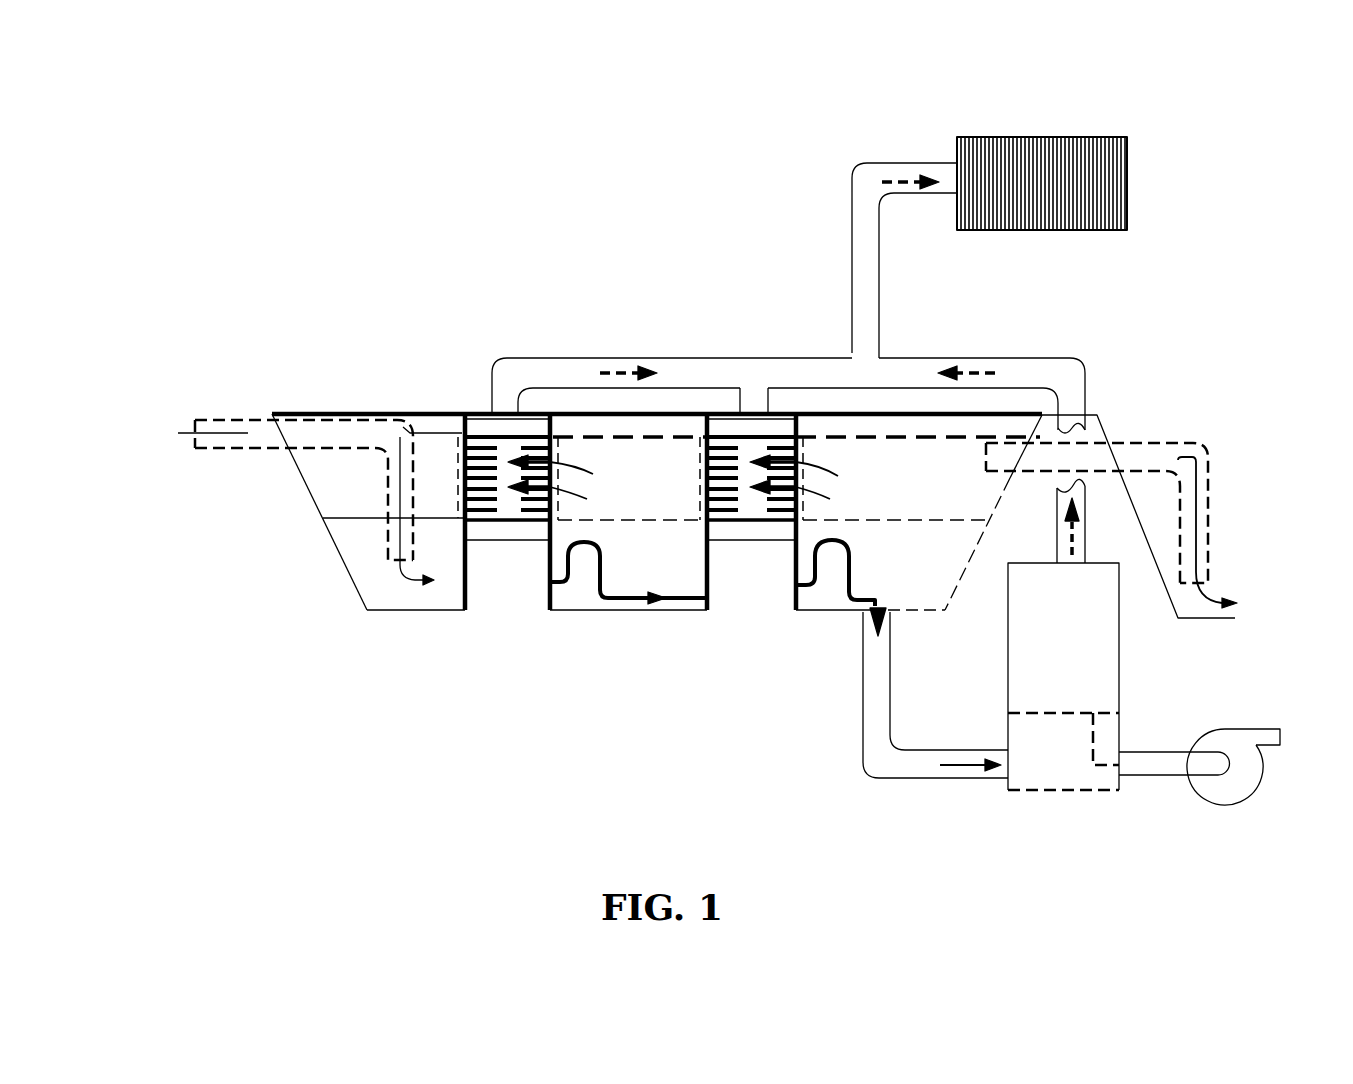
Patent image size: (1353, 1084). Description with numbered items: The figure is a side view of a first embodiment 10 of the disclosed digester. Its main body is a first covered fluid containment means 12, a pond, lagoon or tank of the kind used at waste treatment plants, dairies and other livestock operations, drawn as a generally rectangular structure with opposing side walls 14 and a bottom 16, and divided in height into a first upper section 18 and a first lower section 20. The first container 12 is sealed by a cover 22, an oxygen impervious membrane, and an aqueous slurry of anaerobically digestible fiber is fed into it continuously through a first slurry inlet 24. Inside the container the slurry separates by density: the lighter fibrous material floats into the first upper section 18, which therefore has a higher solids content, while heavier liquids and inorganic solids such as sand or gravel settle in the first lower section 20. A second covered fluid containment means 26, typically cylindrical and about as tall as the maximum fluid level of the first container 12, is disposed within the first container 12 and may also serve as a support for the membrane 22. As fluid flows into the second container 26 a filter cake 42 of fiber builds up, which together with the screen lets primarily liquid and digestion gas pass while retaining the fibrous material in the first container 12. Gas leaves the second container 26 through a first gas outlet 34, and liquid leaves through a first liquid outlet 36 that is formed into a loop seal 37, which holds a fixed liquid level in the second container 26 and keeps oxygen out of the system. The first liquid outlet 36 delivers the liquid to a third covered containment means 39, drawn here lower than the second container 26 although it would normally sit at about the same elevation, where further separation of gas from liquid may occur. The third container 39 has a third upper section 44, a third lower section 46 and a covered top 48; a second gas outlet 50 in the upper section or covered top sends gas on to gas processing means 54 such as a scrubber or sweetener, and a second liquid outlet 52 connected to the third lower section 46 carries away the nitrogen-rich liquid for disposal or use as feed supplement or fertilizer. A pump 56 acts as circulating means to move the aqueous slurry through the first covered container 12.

The first embodiment 10 is at (640, 283).
The first covered fluid containment means 12 is at (295, 508).
The side walls 14 is at (656, 497).
The bottom 16 is at (415, 612).
The first upper section 18 is at (1073, 488).
The first lower section 20 is at (980, 545).
The cover 22 is at (304, 412).
The first slurry inlet 24 is at (232, 412).
The second covered fluid containment means 26 is at (622, 476).
The first gas outlet 34 is at (879, 275).
The first liquid outlet 36 is at (779, 649).
The loop seal 37 is at (595, 538).
The third covered containment means 39 is at (1101, 663).
The filter cake 42 is at (575, 505).
The third upper section 44 is at (1119, 620).
The third lower section 46 is at (1119, 735).
The covered top 48 is at (1095, 563).
The second gas outlet 50 is at (1087, 505).
The second liquid outlet 52 is at (1175, 752).
The gas processing means 54 is at (1127, 185).
The pump 56 is at (1225, 805).